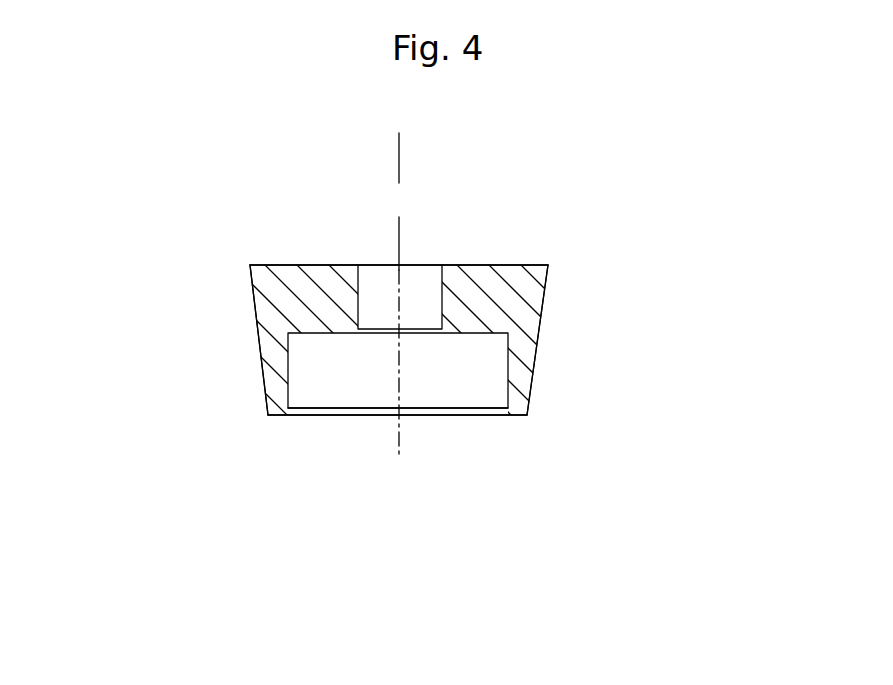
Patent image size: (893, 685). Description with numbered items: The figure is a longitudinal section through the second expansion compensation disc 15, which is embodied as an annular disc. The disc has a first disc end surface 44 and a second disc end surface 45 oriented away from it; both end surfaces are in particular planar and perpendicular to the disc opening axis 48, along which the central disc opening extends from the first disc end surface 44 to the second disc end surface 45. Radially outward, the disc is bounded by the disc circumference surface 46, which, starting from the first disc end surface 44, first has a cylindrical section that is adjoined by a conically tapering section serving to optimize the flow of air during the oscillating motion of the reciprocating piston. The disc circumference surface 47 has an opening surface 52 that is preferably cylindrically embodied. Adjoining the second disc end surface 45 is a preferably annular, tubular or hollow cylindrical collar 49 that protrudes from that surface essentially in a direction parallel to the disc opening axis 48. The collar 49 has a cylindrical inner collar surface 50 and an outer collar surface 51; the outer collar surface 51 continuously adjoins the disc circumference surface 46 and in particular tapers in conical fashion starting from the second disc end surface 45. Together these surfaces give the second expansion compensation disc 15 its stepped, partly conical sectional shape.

The second expansion compensation disc 15 is at (274, 152).
The first disc end surface 44 is at (531, 257).
The second disc end surface 45 is at (529, 427).
The disc circumference surface 46 is at (556, 331).
The disc circumference surface 47 is at (390, 318).
The disc opening axis 48 is at (398, 418).
The collar 49 is at (520, 366).
The inner collar surface 50 is at (300, 369).
The outer collar surface 51 is at (253, 365).
The opening surface 52 is at (368, 300).